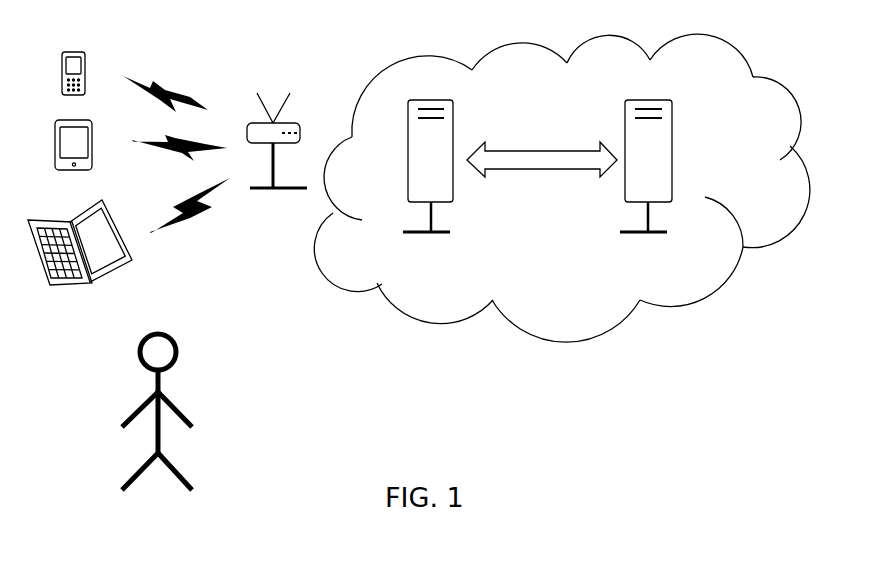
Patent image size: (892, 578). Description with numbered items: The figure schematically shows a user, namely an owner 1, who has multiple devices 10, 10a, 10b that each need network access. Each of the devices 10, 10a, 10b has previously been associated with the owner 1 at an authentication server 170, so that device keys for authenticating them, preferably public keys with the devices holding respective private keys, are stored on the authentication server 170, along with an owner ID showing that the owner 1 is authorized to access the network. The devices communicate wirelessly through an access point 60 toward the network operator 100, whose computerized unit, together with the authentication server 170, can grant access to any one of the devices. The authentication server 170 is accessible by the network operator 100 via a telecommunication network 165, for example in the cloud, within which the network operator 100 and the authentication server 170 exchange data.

The owner 1 is at (168, 493).
The device 10 is at (86, 65).
The device 10a is at (94, 136).
The device 10b is at (101, 203).
The wireless access point / router 60 is at (284, 190).
The network operator 100 is at (428, 100).
The telecommunication network 165 is at (436, 312).
The authentication server 170 is at (626, 130).